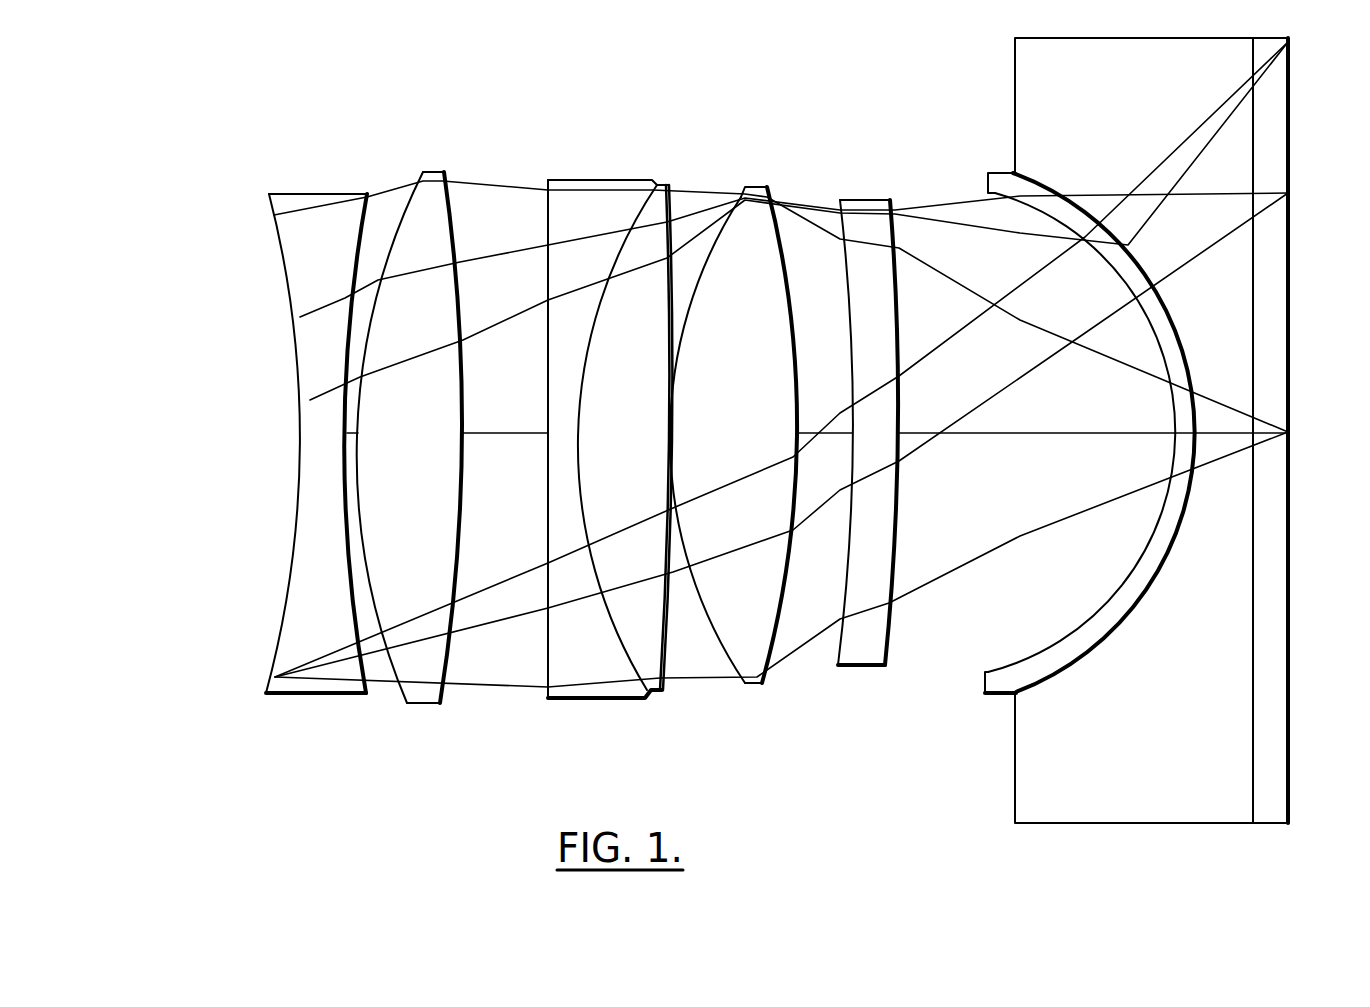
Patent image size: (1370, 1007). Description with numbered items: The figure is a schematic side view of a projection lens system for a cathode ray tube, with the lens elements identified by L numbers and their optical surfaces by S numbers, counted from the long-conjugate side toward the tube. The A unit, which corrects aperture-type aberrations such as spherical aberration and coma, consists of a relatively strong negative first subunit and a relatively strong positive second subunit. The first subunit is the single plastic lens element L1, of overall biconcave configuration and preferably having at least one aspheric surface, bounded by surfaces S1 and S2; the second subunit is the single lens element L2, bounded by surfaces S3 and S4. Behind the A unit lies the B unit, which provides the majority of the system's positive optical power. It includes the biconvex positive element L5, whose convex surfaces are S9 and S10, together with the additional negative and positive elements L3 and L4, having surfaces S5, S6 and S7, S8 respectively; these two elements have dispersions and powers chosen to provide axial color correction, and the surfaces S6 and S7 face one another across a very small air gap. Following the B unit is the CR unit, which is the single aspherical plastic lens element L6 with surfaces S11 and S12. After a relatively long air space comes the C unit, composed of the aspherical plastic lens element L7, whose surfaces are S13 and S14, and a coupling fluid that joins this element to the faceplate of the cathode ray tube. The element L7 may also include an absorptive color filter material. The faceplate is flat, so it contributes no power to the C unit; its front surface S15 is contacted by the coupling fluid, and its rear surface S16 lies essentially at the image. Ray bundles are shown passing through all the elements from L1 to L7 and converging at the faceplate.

The lens element L1 is at (283, 401).
The lens element L2 is at (407, 445).
The lens element L3 is at (577, 435).
The lens element L4 is at (655, 443).
The biconvex lens element L5 is at (742, 441).
The aspherical lens element L6 is at (862, 425).
The aspherical plastic lens element L7 is at (1060, 444).
The surface S1 is at (292, 572).
The surface S2 is at (340, 620).
The surface S3 is at (406, 690).
The surface S4 is at (449, 692).
The surface S5 is at (545, 667).
The surface S6 is at (630, 662).
The surface S7 is at (650, 690).
The surface S8 is at (667, 650).
The surface S9 is at (718, 657).
The surface S10 is at (775, 657).
The surface S11 is at (840, 640).
The surface S12 is at (884, 667).
The surface S13 is at (1008, 665).
The surface S14 is at (1037, 678).
The surface S15 is at (1250, 778).
The surface S16 is at (1290, 790).